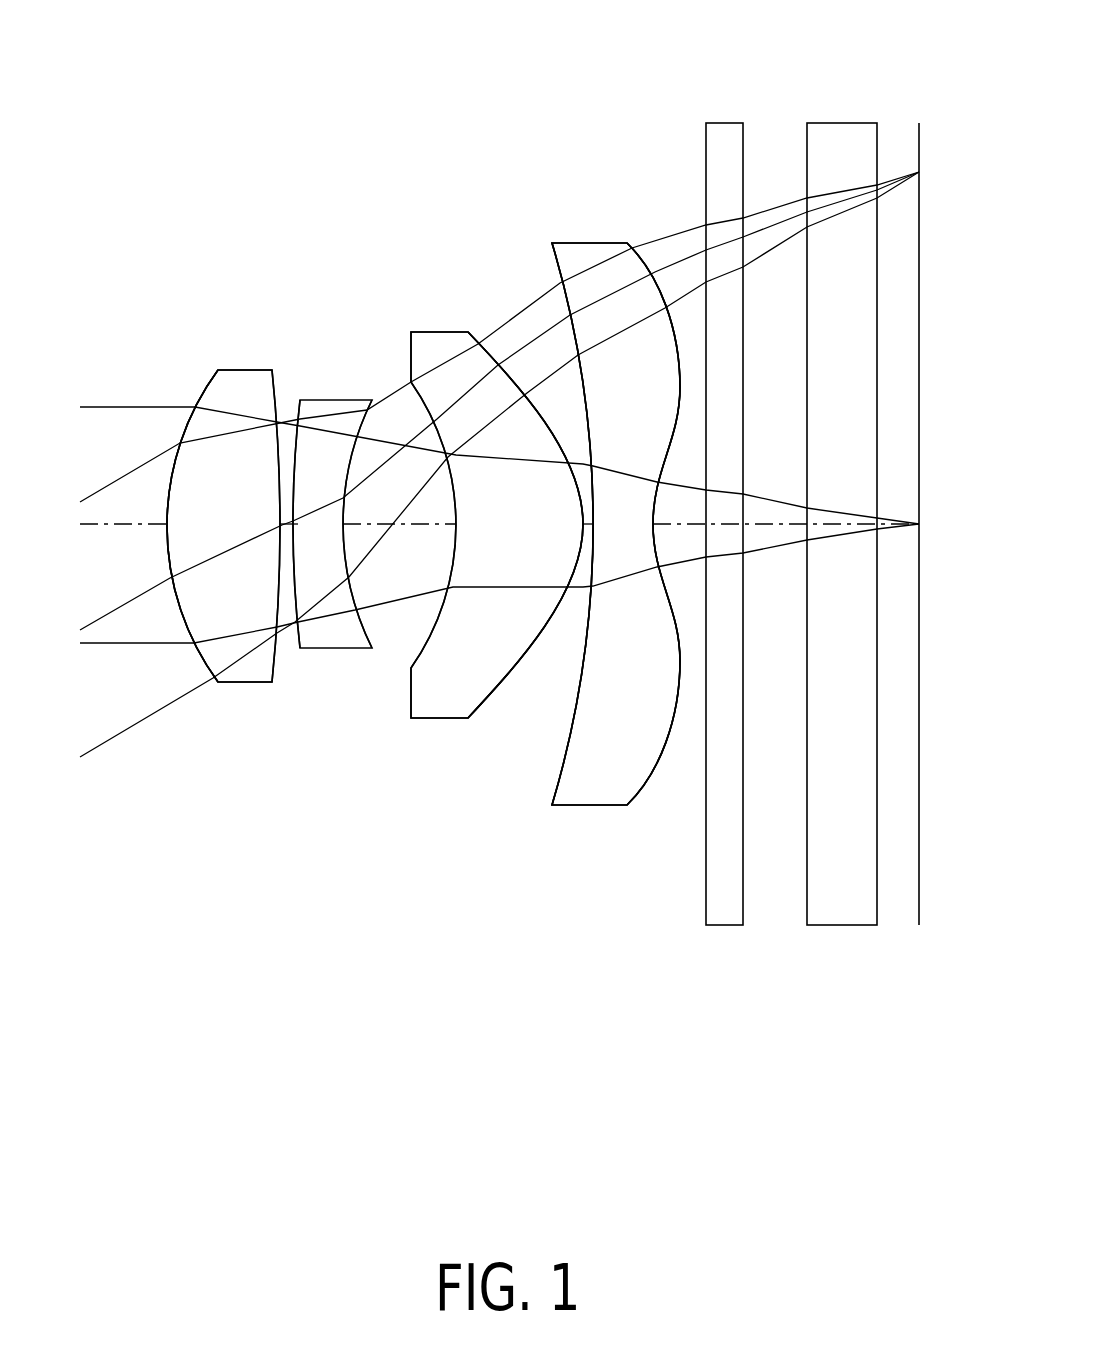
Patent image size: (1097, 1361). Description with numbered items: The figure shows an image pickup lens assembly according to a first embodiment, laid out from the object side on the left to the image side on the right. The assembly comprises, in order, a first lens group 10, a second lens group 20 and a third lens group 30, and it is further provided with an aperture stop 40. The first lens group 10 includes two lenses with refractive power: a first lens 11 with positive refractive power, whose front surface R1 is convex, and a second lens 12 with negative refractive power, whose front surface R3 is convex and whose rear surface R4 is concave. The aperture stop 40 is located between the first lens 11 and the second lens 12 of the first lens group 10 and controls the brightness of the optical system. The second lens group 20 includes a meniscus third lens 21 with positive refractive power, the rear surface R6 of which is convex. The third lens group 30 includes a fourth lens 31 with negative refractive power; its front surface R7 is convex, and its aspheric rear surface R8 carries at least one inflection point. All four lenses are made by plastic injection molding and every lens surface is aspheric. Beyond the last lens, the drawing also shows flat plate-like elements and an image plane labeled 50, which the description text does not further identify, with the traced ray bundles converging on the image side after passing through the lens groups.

The first lens group 10 is at (260, 362).
The first lens 11 is at (192, 658).
The front surface of the first lens R1 is at (206, 590).
The aperture stop 40 is at (283, 404).
The second lens 12 is at (332, 622).
The front surface of the second lens R3 is at (289, 640).
The rear surface of the second lens R4 is at (360, 614).
The second lens group 20 is at (422, 326).
The third lens 21 is at (441, 690).
The rear surface of the third lens R6 is at (506, 662).
The third lens group 30 is at (582, 238).
The fourth lens 31 is at (608, 768).
The front surface of the fourth lens R7 is at (566, 758).
The rear surface of the fourth lens R8 is at (658, 752).
The filter / cover glass and image plane 50 is at (910, 212).